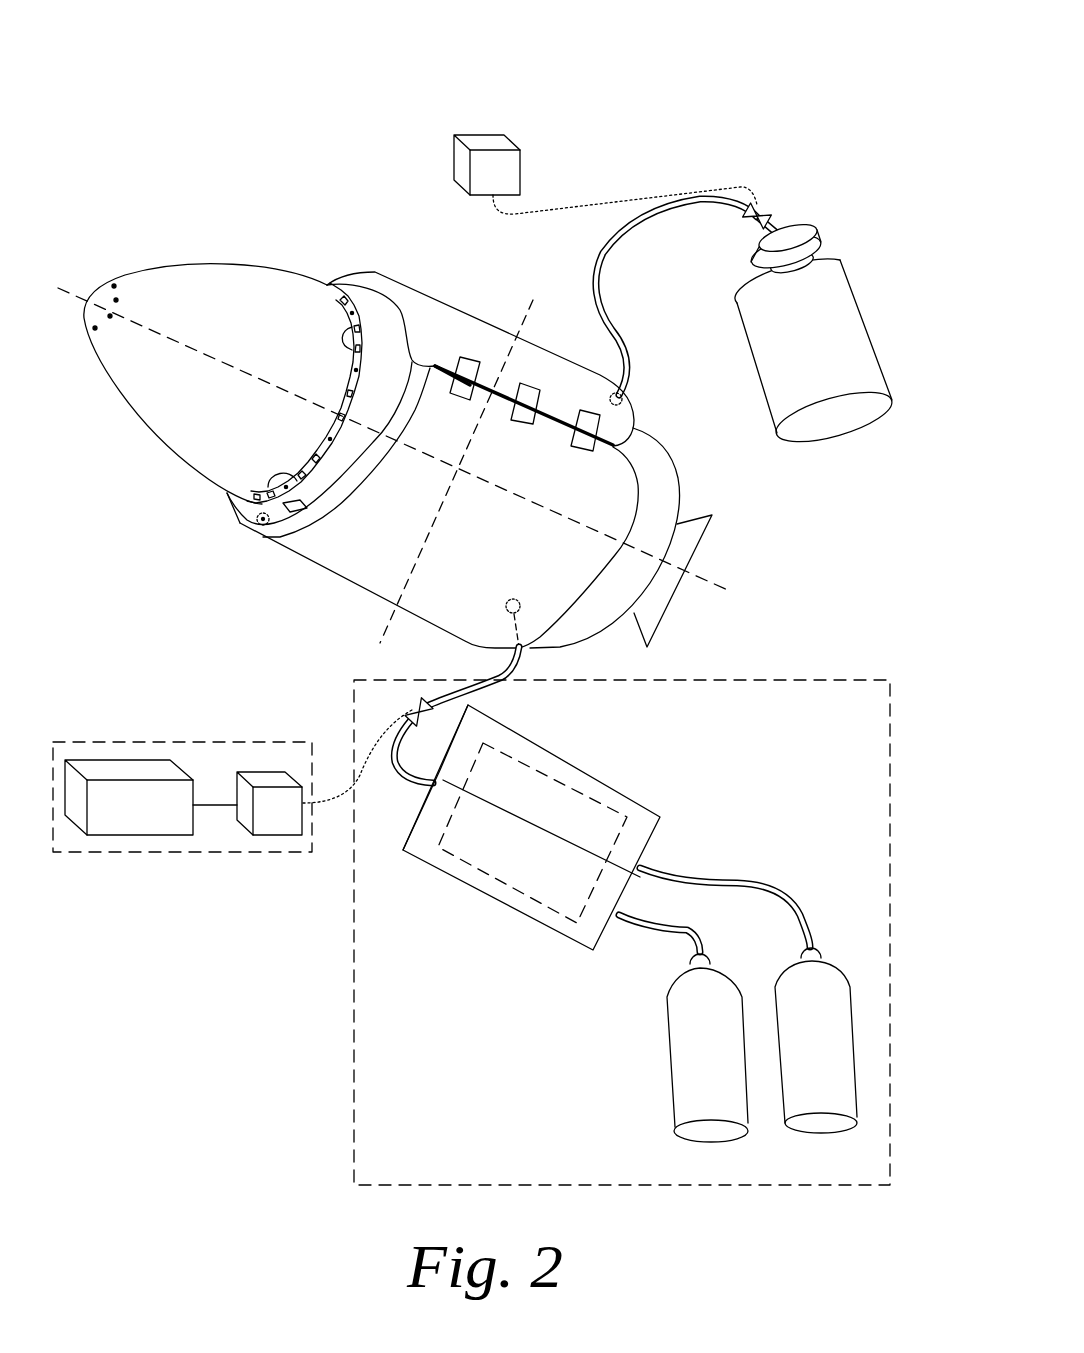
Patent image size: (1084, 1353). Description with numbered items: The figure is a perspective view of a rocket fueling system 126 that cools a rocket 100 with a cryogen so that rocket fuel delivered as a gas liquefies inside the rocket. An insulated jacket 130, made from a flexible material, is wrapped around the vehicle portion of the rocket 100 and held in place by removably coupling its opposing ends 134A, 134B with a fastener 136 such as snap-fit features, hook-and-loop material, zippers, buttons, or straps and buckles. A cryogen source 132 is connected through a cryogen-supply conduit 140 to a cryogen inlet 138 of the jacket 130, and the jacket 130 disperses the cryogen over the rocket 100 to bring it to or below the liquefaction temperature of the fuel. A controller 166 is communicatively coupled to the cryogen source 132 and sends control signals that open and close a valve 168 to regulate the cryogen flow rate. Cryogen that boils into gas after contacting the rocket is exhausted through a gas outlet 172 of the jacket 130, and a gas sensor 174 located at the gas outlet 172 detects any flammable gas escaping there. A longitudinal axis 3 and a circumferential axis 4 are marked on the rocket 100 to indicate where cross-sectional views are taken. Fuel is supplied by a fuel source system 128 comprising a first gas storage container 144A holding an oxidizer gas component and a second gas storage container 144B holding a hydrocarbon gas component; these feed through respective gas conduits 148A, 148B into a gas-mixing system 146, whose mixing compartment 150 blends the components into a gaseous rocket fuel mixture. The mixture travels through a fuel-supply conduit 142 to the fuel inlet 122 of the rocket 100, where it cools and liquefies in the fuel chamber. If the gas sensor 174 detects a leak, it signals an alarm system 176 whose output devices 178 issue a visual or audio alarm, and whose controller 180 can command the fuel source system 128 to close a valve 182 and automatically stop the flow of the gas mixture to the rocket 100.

The rocket fueling system 126 is at (852, 66).
The controller 166 is at (482, 133).
The valve 168 is at (756, 206).
The cryogen-supply conduit 140 is at (689, 212).
The cryogen source 132 is at (868, 291).
The cryogen inlet 138 is at (632, 401).
The rocket 100 is at (668, 468).
The insulated jacket 130 is at (313, 557).
The gas outlet 172 is at (260, 530).
The gas sensor 174 is at (252, 519).
The fastener 136 is at (470, 357).
The opposing end 134A is at (558, 413).
The opposing end 134B is at (558, 413).
The circumferential axis 4 is at (530, 297).
The longitudinal axis 3 is at (736, 592).
The fuel inlet 122 is at (512, 597).
The fuel-supply conduit 142 is at (500, 670).
The valve 182 is at (413, 704).
The alarm system 176 is at (193, 742).
The output devices 178 is at (118, 768).
The controller 180 is at (266, 785).
The fuel source system 128 is at (352, 985).
The gas-mixing system 146 is at (452, 877).
The mixing compartment 150 is at (508, 865).
The gas conduit 148A is at (800, 900).
The gas conduit 148B is at (720, 937).
The first gas storage container 144A is at (812, 1132).
The second gas storage container 144B is at (668, 1050).